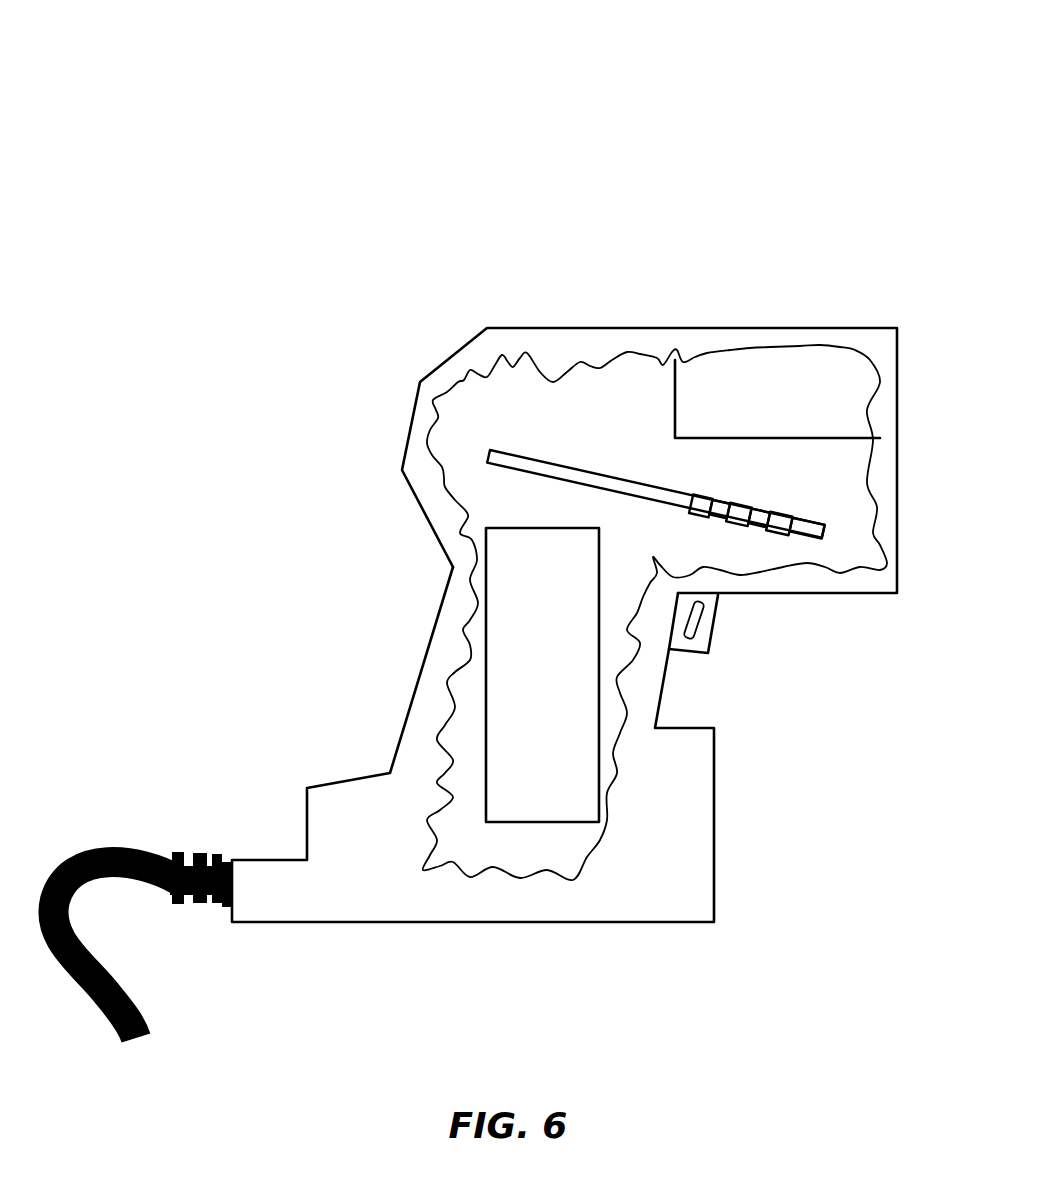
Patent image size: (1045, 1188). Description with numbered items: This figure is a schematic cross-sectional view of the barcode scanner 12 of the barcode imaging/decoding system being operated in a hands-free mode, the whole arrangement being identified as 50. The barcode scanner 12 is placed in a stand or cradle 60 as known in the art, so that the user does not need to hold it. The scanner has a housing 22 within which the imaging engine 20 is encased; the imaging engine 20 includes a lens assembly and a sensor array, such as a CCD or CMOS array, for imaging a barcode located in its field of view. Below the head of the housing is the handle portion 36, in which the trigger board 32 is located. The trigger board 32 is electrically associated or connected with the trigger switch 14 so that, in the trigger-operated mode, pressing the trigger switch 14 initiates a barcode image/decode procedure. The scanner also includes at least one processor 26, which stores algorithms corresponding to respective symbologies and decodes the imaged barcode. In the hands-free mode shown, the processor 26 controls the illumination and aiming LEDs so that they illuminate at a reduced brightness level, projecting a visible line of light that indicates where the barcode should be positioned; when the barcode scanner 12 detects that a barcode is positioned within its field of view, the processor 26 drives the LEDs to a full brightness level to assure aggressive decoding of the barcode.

The imaging reader assembly 50 is at (538, 150).
The barcode scanner 12 is at (713, 273).
The housing 22 is at (603, 327).
The imaging engine 20 is at (777, 365).
The processor 26 is at (778, 537).
The handle portion 36 is at (432, 637).
The trigger board 32 is at (500, 712).
The trigger switch 14 is at (710, 640).
The stand or cradle 60 is at (738, 947).